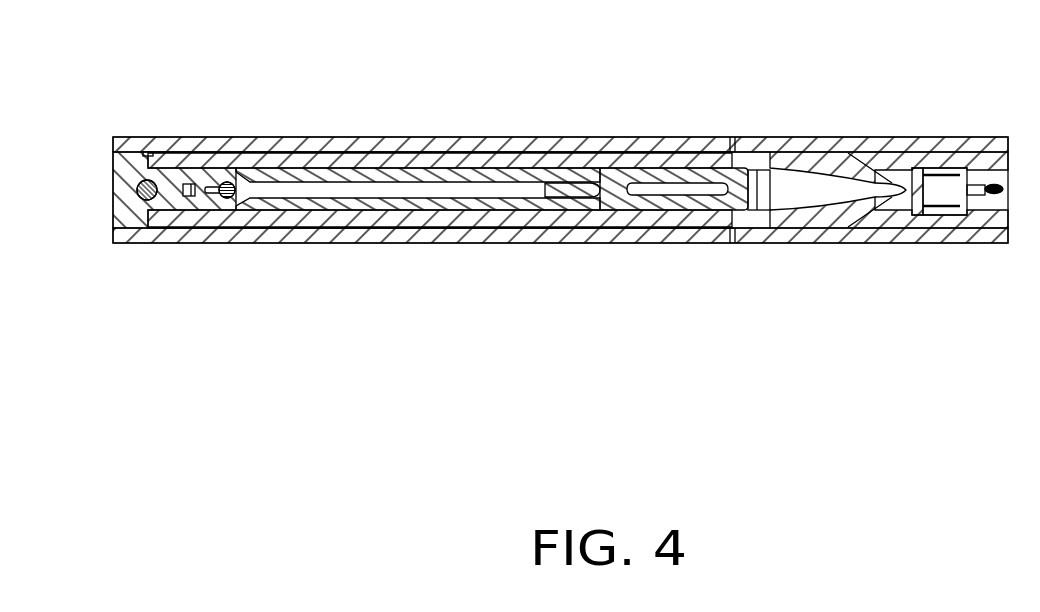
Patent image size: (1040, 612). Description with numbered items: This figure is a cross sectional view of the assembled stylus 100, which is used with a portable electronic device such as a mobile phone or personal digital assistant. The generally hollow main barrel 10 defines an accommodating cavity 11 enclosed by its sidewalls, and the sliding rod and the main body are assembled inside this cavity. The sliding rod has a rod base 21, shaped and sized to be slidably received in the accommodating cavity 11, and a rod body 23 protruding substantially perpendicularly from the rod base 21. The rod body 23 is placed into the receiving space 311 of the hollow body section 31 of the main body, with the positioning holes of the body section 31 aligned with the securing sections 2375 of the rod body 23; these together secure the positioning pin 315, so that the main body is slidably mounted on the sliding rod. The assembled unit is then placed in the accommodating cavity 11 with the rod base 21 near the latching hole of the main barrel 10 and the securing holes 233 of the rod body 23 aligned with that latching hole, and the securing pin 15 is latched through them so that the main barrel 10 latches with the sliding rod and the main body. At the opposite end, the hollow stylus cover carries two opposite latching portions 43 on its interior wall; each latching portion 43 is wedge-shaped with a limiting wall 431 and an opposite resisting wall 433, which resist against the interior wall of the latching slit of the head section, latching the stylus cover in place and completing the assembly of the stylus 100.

The stylus 100 is at (136, 76).
The main barrel 10 is at (517, 150).
The accommodating cavity 11 is at (308, 150).
The rod body 23 is at (616, 186).
The securing holes 233 is at (138, 211).
The rod base 21 is at (127, 190).
The securing pin 15 is at (140, 186).
The positioning pin 315 is at (228, 198).
The body section 31 is at (668, 218).
The securing sections 2375 is at (587, 190).
The receiving space 311 is at (752, 198).
The latching portions 43 is at (782, 228).
The limiting wall 431 is at (778, 153).
The resisting wall 433 is at (807, 153).